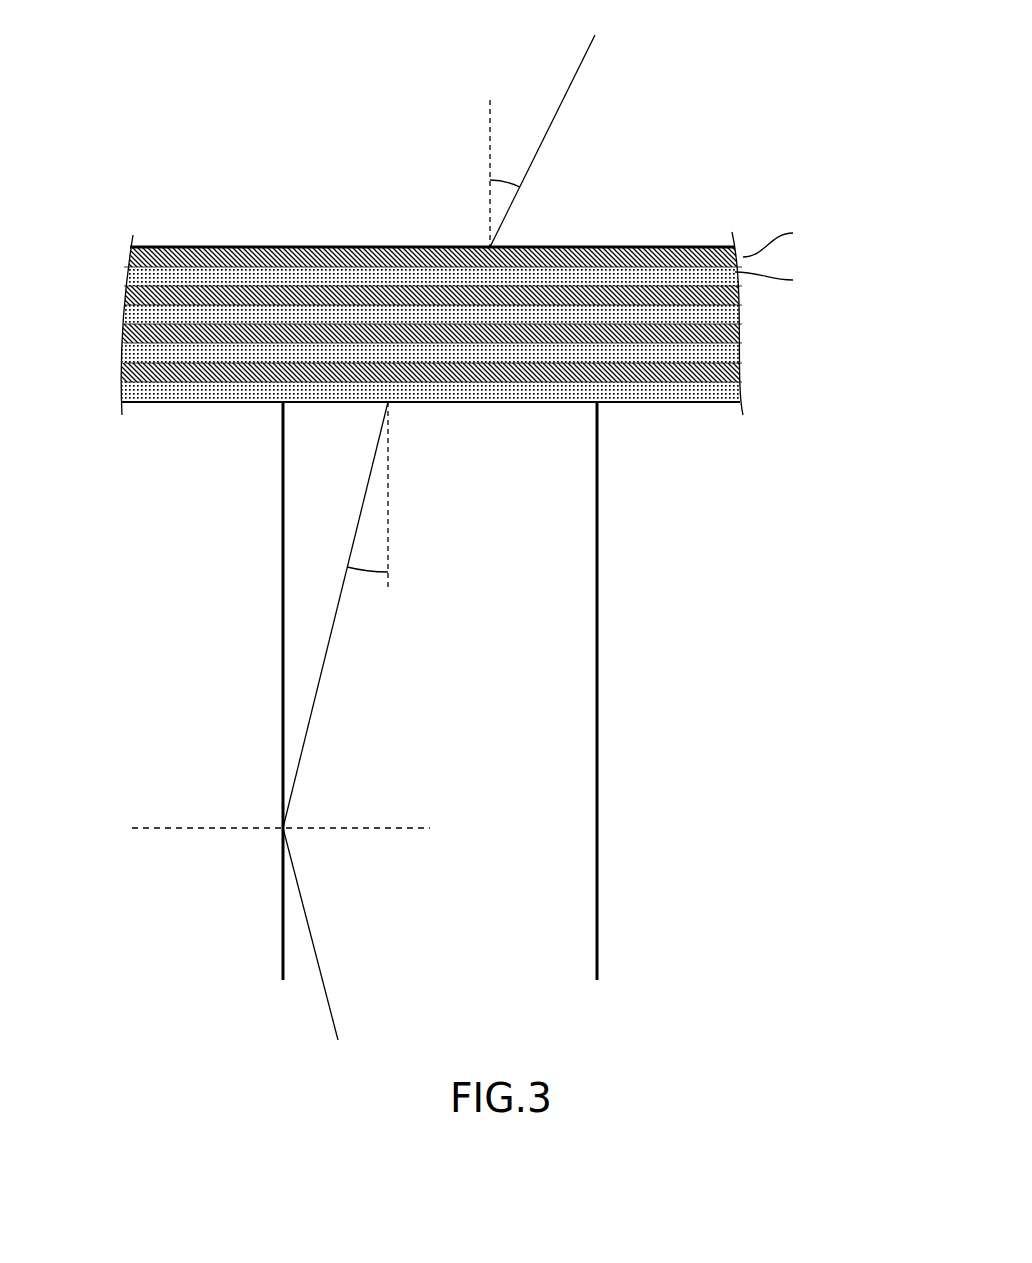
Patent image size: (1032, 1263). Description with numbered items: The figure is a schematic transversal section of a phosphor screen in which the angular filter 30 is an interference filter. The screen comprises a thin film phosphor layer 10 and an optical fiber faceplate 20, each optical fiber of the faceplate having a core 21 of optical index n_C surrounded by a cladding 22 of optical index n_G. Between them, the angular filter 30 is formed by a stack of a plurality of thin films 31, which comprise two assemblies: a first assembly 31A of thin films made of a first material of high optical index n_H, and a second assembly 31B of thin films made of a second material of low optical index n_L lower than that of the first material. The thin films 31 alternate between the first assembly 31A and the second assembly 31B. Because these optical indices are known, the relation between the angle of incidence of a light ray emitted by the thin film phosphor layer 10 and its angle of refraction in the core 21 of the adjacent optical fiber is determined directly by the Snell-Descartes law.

The thin film phosphor layer 10 is at (699, 155).
The optical fiber faceplate 20 is at (475, 721).
The core 21 is at (519, 655).
The cladding 22 is at (716, 792).
The angular filter 30 is at (476, 312).
The thin films 31 is at (733, 353).
The first assembly of thin films 31A is at (435, 314).
The second assembly of thin films 31B is at (435, 334).